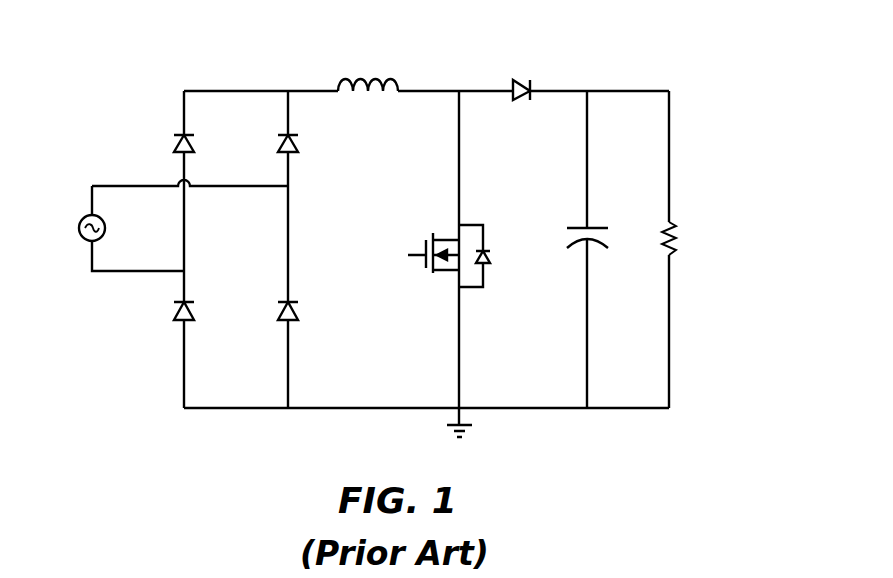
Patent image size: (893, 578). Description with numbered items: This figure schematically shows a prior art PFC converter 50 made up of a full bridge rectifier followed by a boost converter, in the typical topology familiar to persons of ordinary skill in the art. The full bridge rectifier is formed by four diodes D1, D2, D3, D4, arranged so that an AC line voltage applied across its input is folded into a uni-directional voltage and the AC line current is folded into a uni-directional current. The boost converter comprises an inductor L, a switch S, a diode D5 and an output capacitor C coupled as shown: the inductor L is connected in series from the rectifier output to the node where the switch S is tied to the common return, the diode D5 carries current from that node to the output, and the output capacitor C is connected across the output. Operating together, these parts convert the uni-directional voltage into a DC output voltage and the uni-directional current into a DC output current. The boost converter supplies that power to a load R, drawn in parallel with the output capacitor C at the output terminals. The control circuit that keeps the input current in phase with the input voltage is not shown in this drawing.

The PFC converter 50 is at (123, 82).
The diode D1 is at (168, 313).
The diode D2 is at (168, 145).
The diode D3 is at (272, 313).
The diode D4 is at (272, 145).
The diode D5 is at (525, 74).
The inductor L is at (368, 69).
The switch S is at (449, 262).
The output capacitor C is at (575, 238).
The load R is at (656, 238).